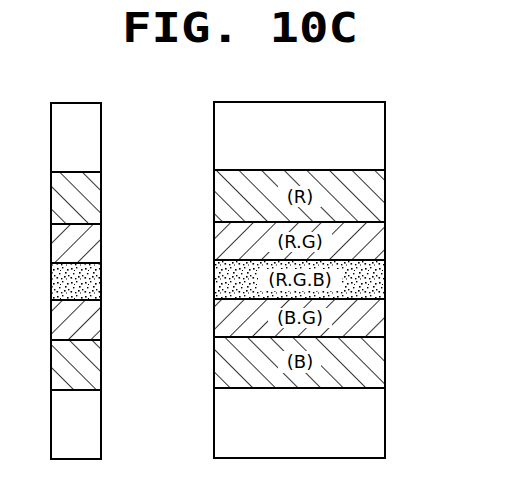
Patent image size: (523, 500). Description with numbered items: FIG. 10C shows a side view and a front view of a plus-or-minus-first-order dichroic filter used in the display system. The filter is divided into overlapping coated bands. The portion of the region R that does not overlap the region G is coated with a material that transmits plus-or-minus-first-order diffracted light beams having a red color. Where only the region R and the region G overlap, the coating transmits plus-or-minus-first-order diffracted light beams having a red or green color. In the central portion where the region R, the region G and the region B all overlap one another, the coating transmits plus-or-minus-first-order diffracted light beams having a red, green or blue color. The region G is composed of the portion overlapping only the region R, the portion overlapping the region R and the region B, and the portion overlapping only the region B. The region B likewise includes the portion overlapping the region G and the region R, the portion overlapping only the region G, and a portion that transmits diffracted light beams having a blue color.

The region R is at (392, 175).
The region G is at (212, 225).
The region B is at (390, 260).